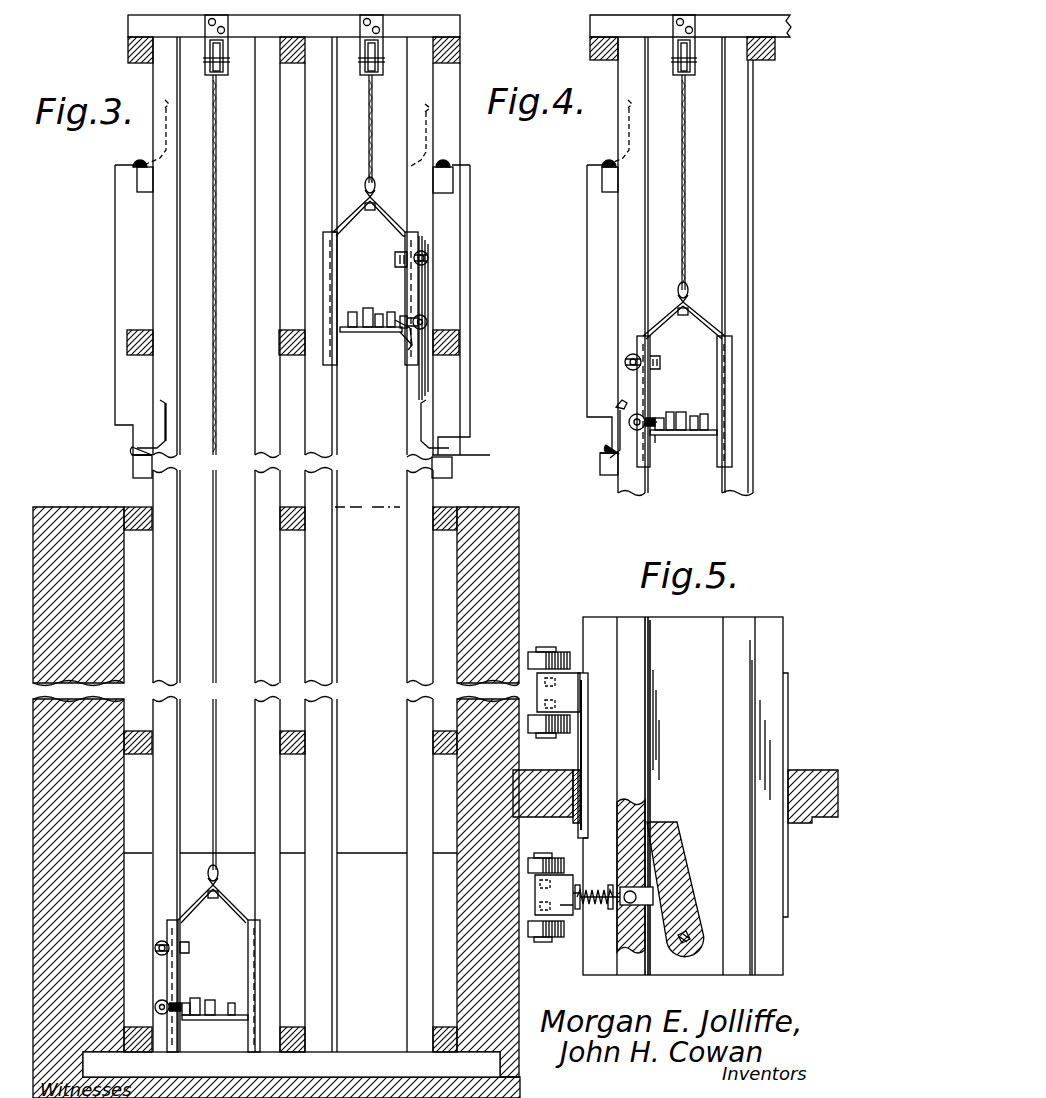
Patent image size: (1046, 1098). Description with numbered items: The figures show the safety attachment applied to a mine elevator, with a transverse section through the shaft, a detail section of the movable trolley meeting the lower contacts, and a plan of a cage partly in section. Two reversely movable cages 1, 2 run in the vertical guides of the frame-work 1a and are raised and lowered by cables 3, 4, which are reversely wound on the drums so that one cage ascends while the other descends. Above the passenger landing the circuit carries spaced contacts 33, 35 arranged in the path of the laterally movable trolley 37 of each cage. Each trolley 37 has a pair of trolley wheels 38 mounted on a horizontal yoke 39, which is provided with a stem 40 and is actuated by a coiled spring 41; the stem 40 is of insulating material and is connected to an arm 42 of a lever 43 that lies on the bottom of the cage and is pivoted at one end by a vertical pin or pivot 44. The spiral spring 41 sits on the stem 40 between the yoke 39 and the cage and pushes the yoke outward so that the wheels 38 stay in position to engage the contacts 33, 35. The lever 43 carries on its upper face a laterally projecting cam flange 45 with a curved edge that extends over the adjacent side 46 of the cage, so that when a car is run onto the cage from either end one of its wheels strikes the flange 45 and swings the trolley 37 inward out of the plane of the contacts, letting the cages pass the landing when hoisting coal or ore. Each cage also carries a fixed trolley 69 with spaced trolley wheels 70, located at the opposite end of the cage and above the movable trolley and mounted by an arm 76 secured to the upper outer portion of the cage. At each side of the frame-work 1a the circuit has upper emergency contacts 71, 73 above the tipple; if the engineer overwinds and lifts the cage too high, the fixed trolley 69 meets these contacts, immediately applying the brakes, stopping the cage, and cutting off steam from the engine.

In FIG. 3, the cage 1 is at (213, 958).
In FIG. 5, the cage 1 is at (685, 796).
In FIG. 3, the frame-work 1a is at (262, 104).
In FIG. 4, the frame-work 1a is at (795, 124).
In FIG. 5, the frame-work 1a is at (835, 765).
In FIG. 3, the cage 2 is at (375, 288).
In FIG. 4, the cage 2 is at (684, 374).
In FIG. 3, the cable 3 is at (209, 222).
In FIG. 4, the cable 3 is at (686, 202).
In FIG. 3, the cable 4 is at (377, 143).
In FIG. 3, the contact 33 is at (168, 428).
In FIG. 4, the contact 33 is at (612, 404).
In FIG. 3, the contact 35 is at (420, 432).
In FIG. 5, the trolley 37 is at (542, 896).
In FIG. 3, the trolley wheel 38 is at (424, 320).
In FIG. 4, the trolley wheel 38 is at (630, 424).
In FIG. 5, the trolley wheel 38 is at (523, 958).
In FIG. 3, the yoke 39 is at (412, 333).
In FIG. 4, the yoke 39 is at (655, 437).
In FIG. 5, the yoke 39 is at (572, 890).
In FIG. 5, the stem 40 is at (610, 910).
In FIG. 3, the spring 41 is at (395, 332).
In FIG. 5, the spring 41 is at (585, 910).
In FIG. 5, the arm 42 is at (680, 866).
In FIG. 3, the lever 43 is at (368, 313).
In FIG. 4, the lever 43 is at (684, 420).
In FIG. 5, the lever 43 is at (655, 898).
In FIG. 5, the pivot 44 is at (690, 930).
In FIG. 3, the cam flange 45 is at (390, 310).
In FIG. 4, the cam flange 45 is at (670, 412).
In FIG. 3, the side 46 is at (402, 314).
In FIG. 4, the side 46 is at (662, 432).
In FIG. 5, the side 46 is at (633, 772).
In FIG. 5, the fixed trolley 69 is at (565, 692).
In FIG. 3, the trolley wheel 70 is at (428, 258).
In FIG. 4, the trolley wheel 70 is at (628, 362).
In FIG. 5, the trolley wheel 70 is at (533, 661).
In FIG. 3, the upper emergency contact 71 is at (166, 148).
In FIG. 4, the upper emergency contact 71 is at (629, 135).
In FIG. 3, the upper emergency contact 73 is at (428, 146).
In FIG. 3, the arm 76 is at (395, 258).
In FIG. 4, the arm 76 is at (661, 362).
In FIG. 5, the arm 76 is at (601, 755).